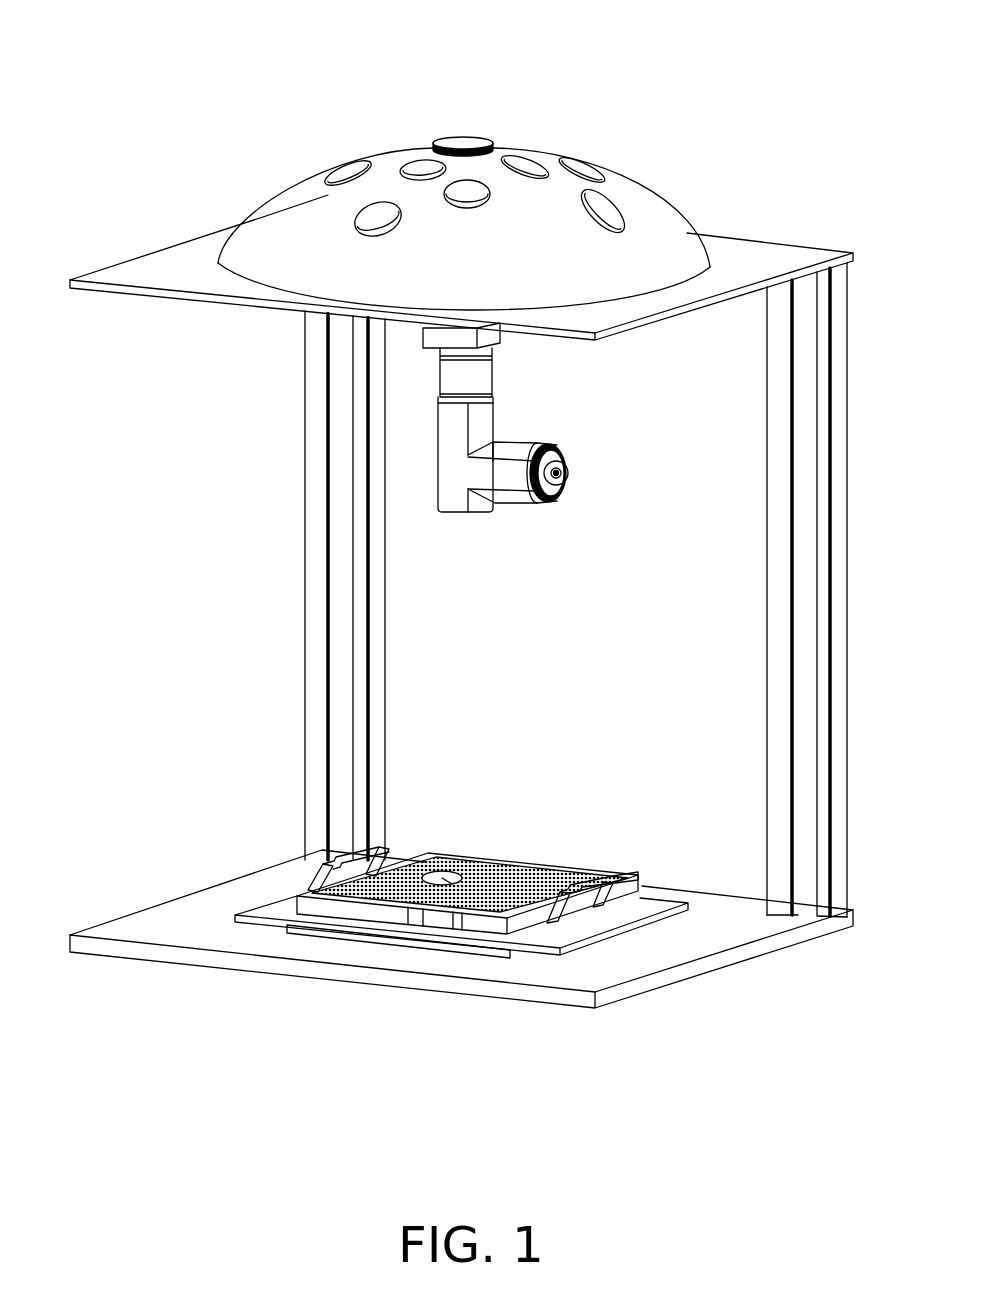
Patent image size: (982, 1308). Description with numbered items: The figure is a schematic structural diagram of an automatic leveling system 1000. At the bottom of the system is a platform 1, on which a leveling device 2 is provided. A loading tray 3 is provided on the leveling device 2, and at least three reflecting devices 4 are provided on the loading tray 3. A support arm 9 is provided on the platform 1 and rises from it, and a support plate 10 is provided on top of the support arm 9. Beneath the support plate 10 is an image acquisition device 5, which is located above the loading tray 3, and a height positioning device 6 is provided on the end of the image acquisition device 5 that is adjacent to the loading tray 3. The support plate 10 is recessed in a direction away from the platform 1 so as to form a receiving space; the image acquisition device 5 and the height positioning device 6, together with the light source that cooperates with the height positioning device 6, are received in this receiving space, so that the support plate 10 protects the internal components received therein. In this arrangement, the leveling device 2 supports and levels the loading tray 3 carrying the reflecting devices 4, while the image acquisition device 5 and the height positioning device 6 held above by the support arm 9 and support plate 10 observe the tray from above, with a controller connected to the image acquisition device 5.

The automatic leveling system 1000 is at (528, 30).
The platform 1 is at (210, 930).
The leveling device 2 is at (282, 908).
The loading tray 3 is at (410, 913).
The reflecting devices 4 is at (420, 858).
The image acquisition device 5 is at (452, 335).
The height positioning device 6 is at (452, 472).
The support arm 9 is at (320, 600).
The support plate 10 is at (337, 230).